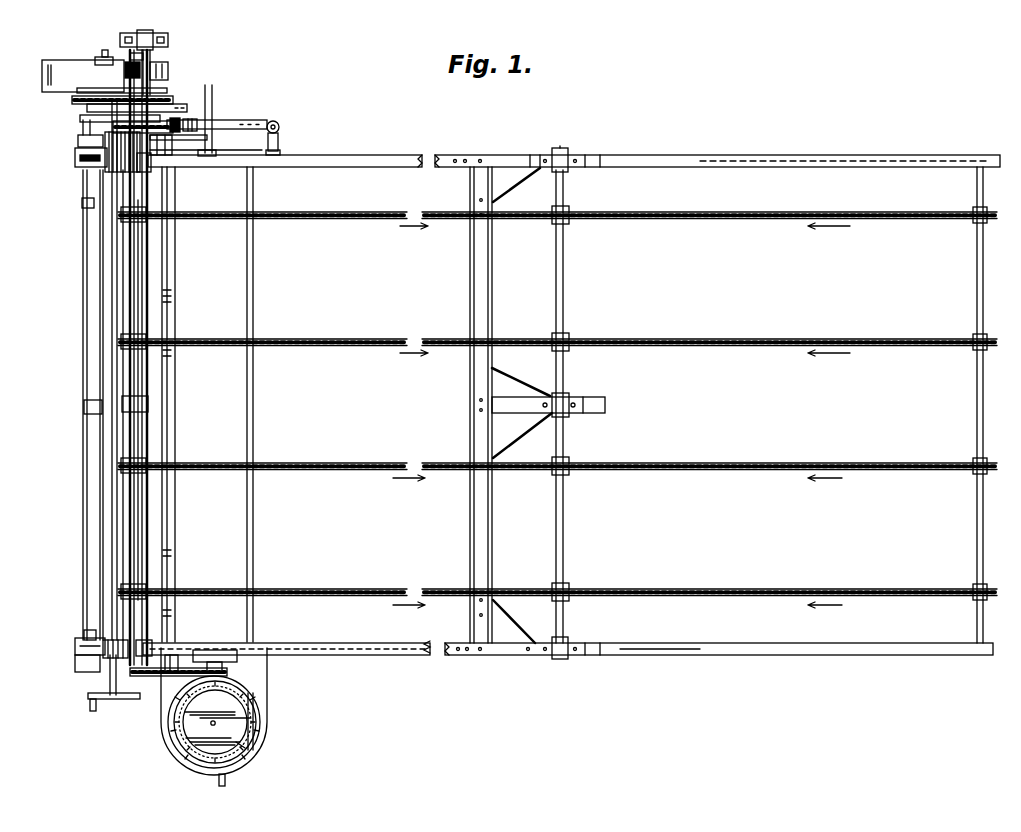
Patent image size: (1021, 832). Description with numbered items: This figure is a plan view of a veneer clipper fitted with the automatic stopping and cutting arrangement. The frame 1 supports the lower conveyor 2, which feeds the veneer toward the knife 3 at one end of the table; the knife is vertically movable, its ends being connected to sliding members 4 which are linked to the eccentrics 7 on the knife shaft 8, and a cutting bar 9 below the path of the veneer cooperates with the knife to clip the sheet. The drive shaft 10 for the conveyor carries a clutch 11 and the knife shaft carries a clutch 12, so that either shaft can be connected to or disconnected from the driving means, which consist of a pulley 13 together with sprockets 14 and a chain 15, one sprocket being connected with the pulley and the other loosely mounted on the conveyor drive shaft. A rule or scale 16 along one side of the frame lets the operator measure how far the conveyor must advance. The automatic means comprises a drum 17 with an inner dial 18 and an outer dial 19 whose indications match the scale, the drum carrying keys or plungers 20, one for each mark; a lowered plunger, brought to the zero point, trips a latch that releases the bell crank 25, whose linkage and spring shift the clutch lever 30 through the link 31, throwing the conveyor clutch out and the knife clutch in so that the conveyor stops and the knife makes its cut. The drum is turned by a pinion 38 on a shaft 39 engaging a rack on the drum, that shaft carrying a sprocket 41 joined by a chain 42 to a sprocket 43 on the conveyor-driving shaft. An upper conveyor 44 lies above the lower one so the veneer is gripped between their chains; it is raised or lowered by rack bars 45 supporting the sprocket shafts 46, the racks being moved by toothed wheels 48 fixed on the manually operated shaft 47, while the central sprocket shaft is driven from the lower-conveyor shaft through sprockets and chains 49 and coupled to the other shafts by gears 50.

The frame 1 is at (285, 163).
The lower conveyor 2 is at (772, 218).
The knife 3 is at (86, 345).
The sliding members 4 is at (85, 198).
The eccentrics 7 is at (75, 152).
The shaft 8 is at (115, 58).
The cutting bar 9 is at (107, 355).
The drive shaft 10 is at (150, 60).
The clutch 11 is at (195, 100).
The clutch 12 is at (110, 100).
The pulley 13 is at (196, 75).
The sprockets 14 is at (200, 80).
The chain 15 is at (110, 115).
The rule or scale 16 is at (390, 650).
The drum 17 is at (193, 755).
The inner dial 18 is at (256, 716).
The outer dial 19 is at (265, 742).
The keys or plungers 20 is at (252, 749).
The bell crank 25 is at (227, 786).
The clutch lever 30 is at (278, 122).
The link 31 is at (200, 133).
The pinion 38 is at (258, 689).
The shaft 39 is at (232, 652).
The sprocket 41 is at (230, 673).
The chain 42 is at (163, 700).
The sprocket 43 is at (130, 672).
The upper conveyor 44 is at (428, 337).
The rack bars 45 is at (150, 160).
The sprocket shafts 46 is at (133, 282).
The manually operated shaft 47 is at (110, 255).
The toothed wheels 48 is at (97, 163).
The sprockets and chains 49 is at (120, 87).
The gears 50 is at (64, 74).